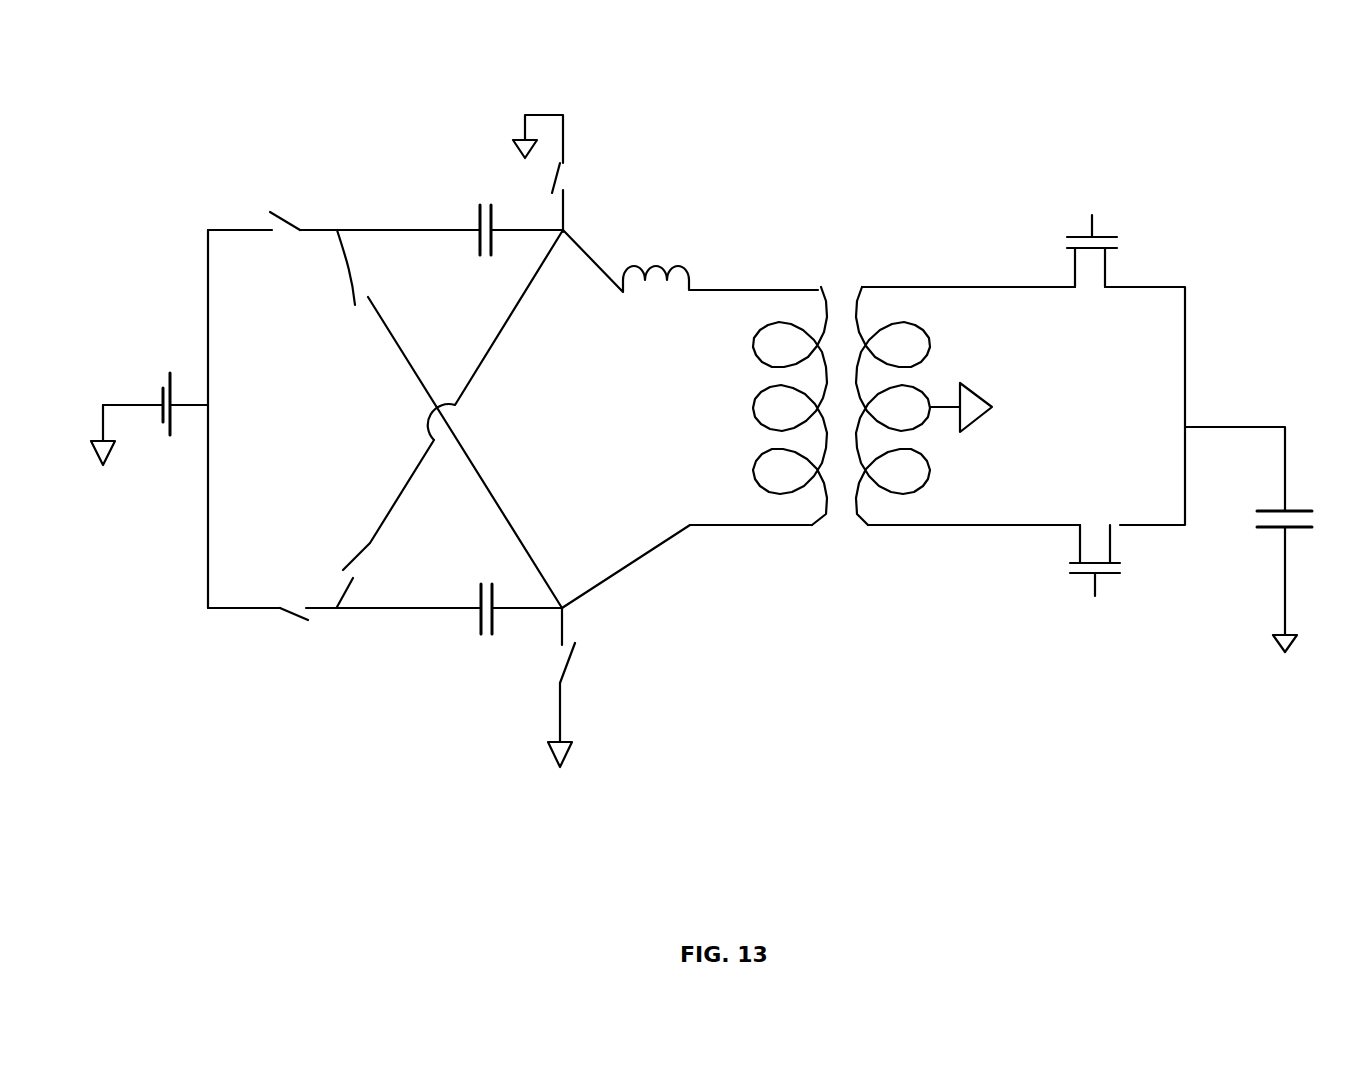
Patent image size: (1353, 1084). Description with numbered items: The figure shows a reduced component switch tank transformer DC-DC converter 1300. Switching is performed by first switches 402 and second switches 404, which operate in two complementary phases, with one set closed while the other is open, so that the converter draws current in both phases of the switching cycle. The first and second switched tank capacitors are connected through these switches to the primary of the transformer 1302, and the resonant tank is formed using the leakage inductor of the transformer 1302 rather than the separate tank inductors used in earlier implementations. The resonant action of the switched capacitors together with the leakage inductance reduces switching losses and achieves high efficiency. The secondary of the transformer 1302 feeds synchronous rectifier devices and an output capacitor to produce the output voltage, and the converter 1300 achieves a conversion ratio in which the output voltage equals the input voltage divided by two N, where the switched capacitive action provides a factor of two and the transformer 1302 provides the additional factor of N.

The reduced component switch tank transformer DC-DC converter 1300 is at (898, 92).
The first switches 402 is at (268, 212).
The second switches 404 is at (372, 299).
The transformer 1302 is at (806, 534).